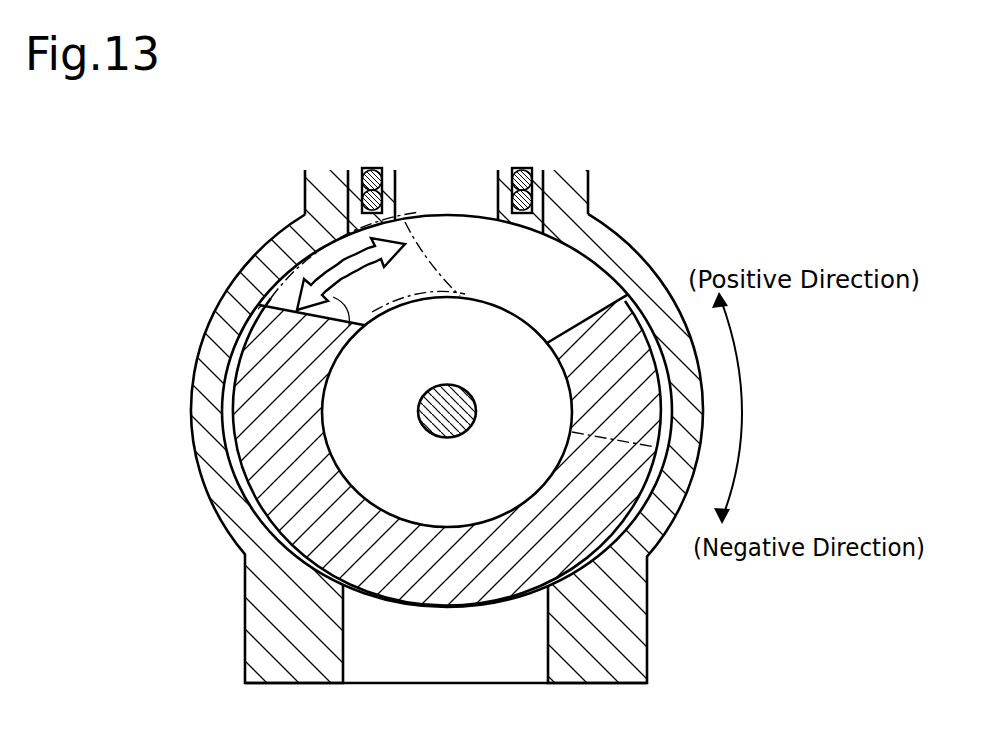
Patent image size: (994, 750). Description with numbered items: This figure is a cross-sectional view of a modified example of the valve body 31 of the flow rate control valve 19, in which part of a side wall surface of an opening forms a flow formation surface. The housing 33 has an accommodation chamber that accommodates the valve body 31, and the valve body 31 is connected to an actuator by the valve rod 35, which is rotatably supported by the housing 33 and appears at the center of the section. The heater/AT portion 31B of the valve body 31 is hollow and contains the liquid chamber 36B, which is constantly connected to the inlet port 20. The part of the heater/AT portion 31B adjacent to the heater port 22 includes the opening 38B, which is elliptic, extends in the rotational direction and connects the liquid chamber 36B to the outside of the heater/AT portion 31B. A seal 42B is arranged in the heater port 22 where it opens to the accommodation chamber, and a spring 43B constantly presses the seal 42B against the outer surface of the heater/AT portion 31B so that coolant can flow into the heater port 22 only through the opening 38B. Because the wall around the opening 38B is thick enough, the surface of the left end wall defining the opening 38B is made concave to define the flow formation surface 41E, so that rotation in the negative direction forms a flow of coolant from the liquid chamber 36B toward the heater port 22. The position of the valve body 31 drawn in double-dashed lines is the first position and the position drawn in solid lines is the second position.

The flow rate control valve 19 is at (148, 256).
The inlet port 20 is at (447, 676).
The heater port 22 is at (484, 178).
The valve body 31 is at (447, 437).
The heater/AT portion 31B is at (447, 606).
The housing 33 is at (206, 463).
The valve rod 35 is at (477, 412).
The liquid chamber 36B is at (447, 412).
The opening 38B is at (506, 288).
The flow formation surface 41E is at (300, 312).
The seal 42B is at (380, 168).
The spring 43B is at (395, 187).